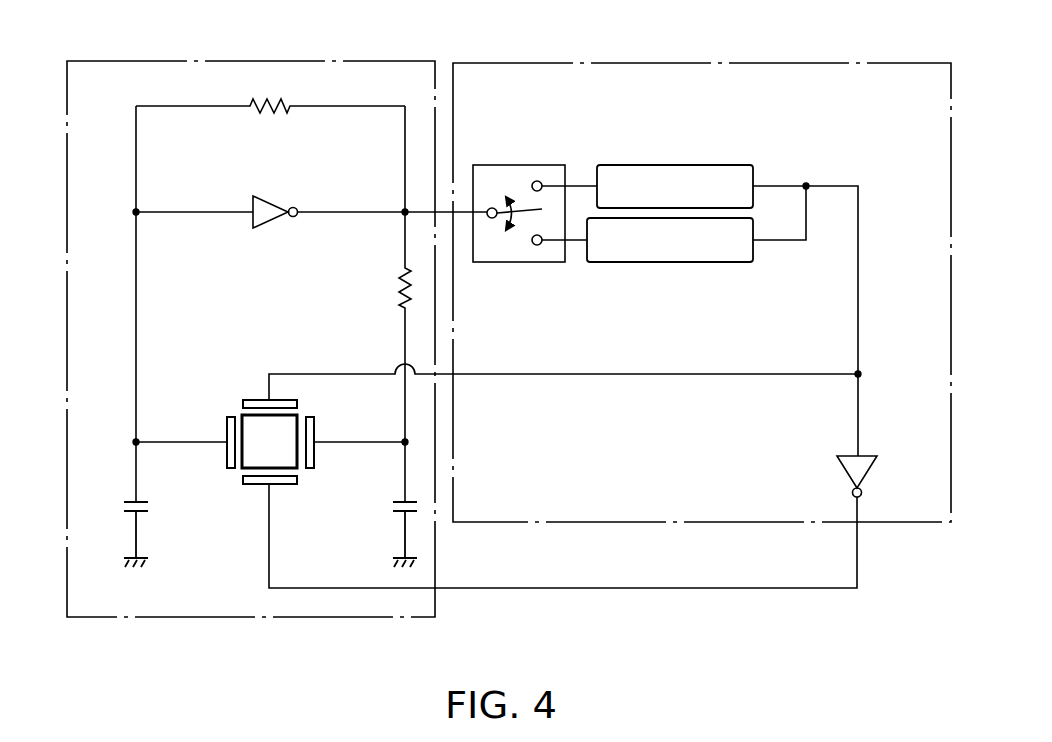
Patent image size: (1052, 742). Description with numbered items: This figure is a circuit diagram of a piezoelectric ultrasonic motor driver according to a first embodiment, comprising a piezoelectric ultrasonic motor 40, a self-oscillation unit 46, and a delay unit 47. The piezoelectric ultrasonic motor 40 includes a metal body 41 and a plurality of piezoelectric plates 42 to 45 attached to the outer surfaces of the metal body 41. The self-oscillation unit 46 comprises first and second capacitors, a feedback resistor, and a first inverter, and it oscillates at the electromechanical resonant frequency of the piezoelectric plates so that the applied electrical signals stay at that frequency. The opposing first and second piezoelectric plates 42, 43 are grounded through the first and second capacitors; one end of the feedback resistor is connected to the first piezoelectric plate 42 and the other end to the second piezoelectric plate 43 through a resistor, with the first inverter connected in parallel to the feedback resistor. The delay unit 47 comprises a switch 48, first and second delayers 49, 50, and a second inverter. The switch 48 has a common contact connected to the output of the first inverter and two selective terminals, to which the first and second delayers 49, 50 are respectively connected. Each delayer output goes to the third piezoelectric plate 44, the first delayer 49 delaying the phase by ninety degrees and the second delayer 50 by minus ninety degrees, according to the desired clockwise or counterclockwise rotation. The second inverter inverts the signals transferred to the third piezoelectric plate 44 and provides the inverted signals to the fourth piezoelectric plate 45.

The piezoelectric ultrasonic motor 40 is at (272, 472).
The metal body 41 is at (257, 432).
The first piezoelectric plate 42 is at (228, 456).
The second piezoelectric plate 43 is at (314, 432).
The third piezoelectric plate 44 is at (253, 400).
The fourth piezoelectric plate 45 is at (284, 485).
The self-oscillation unit 46 is at (250, 61).
The delay unit 47 is at (752, 63).
The switch 48 is at (500, 165).
The first delayer 49 is at (641, 165).
The second delayer 50 is at (640, 262).